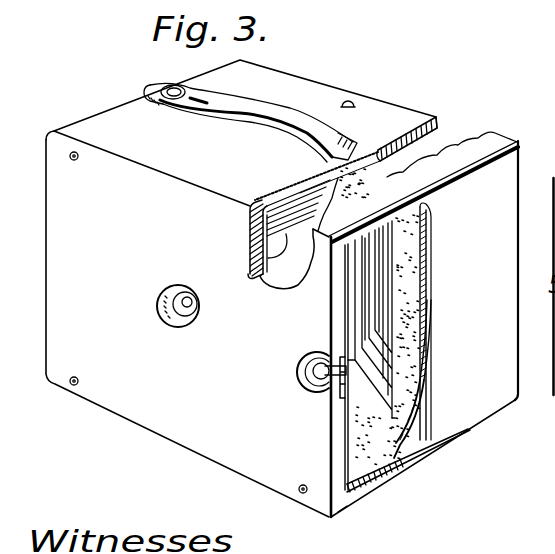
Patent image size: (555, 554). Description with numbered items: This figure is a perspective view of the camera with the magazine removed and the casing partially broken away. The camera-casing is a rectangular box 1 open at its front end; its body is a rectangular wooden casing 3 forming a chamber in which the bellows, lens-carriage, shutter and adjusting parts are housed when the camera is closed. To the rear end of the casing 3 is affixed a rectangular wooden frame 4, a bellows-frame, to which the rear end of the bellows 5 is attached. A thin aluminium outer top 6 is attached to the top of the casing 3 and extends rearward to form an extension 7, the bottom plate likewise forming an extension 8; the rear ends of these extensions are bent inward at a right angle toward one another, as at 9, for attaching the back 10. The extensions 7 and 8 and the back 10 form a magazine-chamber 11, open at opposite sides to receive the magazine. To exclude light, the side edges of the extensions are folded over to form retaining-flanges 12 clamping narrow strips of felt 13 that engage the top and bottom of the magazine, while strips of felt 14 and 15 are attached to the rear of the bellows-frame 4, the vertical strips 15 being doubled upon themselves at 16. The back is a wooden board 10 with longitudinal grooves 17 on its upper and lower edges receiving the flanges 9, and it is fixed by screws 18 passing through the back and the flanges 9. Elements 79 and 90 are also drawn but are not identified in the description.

The rectangular box 1 is at (250, 123).
The rectangular wooden casing 3 is at (436, 123).
The bellows-frame 4 is at (388, 178).
The bellows 5 is at (378, 258).
The outer top 6 is at (327, 177).
The extension of top plate 7 is at (280, 204).
The extension of bottom plate 8 is at (361, 452).
The inwardly bent flanges 9 is at (249, 214).
The back 10 is at (282, 288).
The magazine-chamber 11 is at (285, 238).
The retaining-flanges 12 is at (402, 461).
The strips of felt 13 is at (358, 486).
The strips of felt 14 is at (357, 415).
The vertical strips of felt 15 is at (412, 350).
The fold of vertical strips 16 is at (403, 428).
The longitudinal grooves 17 is at (250, 229).
The screws 18 is at (75, 161).
The knob 79 is at (166, 335).
The hook 90 is at (322, 375).